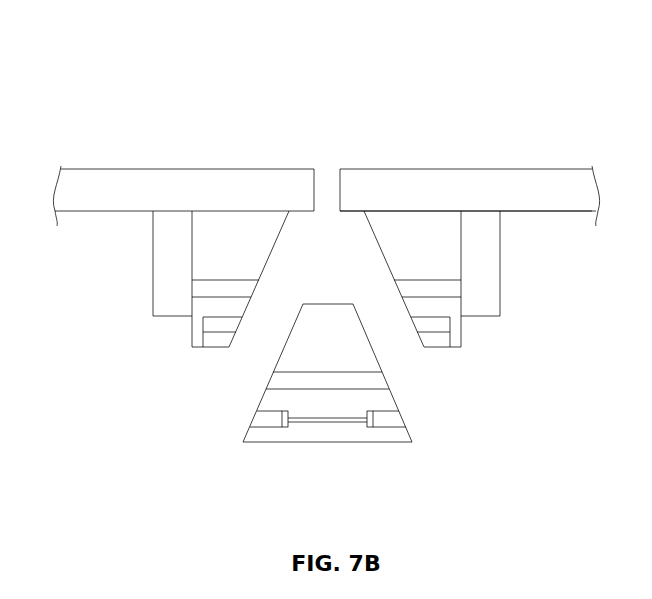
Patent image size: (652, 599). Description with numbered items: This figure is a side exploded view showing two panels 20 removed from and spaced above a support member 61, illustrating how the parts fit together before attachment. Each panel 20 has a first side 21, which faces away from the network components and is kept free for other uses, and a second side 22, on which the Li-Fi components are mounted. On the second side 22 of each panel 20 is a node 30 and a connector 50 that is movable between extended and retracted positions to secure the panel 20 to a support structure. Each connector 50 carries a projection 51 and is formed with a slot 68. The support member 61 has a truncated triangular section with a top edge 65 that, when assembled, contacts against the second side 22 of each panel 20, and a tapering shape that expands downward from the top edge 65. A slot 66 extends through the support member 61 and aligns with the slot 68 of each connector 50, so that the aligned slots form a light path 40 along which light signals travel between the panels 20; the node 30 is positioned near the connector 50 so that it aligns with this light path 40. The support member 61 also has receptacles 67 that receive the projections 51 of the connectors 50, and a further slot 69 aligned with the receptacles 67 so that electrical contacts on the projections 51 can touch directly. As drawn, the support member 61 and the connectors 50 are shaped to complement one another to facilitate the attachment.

The panel 20 is at (104, 183).
The first side 21 is at (80, 168).
The second side 22 is at (95, 211).
The node 30 is at (173, 299).
The light path 40 is at (237, 288).
The connector 50 is at (218, 237).
The projection 51 is at (216, 323).
The support member 61 is at (342, 452).
The top edge 65 is at (328, 304).
The slot 66 is at (290, 379).
The receptacle 67 is at (265, 423).
The slot 68 is at (205, 287).
The slot 69 is at (330, 420).